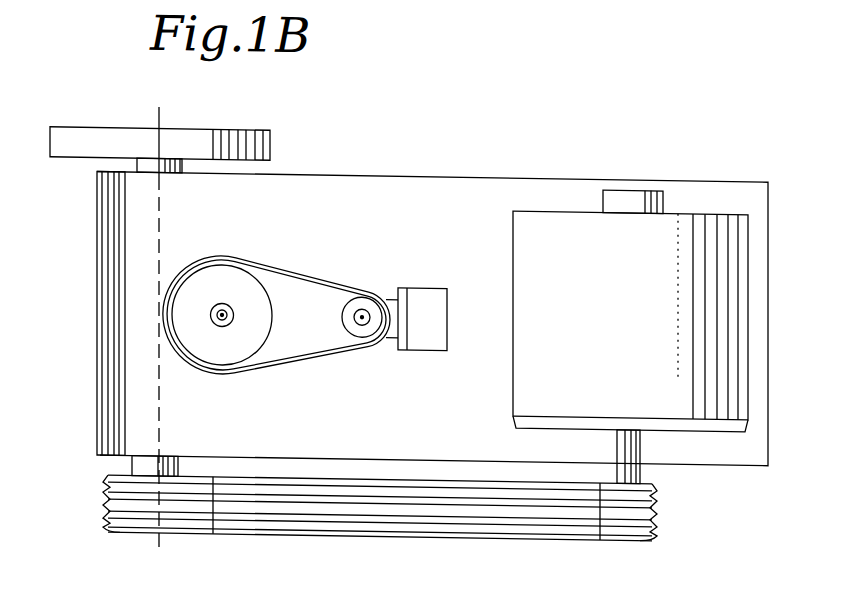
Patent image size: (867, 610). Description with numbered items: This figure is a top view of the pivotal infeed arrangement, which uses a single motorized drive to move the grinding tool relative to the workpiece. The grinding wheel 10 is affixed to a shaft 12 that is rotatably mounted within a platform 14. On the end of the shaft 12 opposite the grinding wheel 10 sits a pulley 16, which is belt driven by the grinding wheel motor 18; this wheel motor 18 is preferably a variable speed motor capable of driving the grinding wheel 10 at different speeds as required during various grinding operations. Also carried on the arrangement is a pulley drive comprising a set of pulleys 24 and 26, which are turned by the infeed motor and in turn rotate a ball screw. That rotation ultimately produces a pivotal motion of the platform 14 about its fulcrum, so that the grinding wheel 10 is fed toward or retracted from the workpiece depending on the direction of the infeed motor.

The grinding wheel 10 is at (121, 128).
The shaft 12 is at (137, 164).
The platform 14 is at (382, 172).
The pulley 16 is at (143, 533).
The grinding wheel motor 18 is at (523, 377).
The pulley 24 is at (362, 297).
The pulley 26 is at (232, 289).